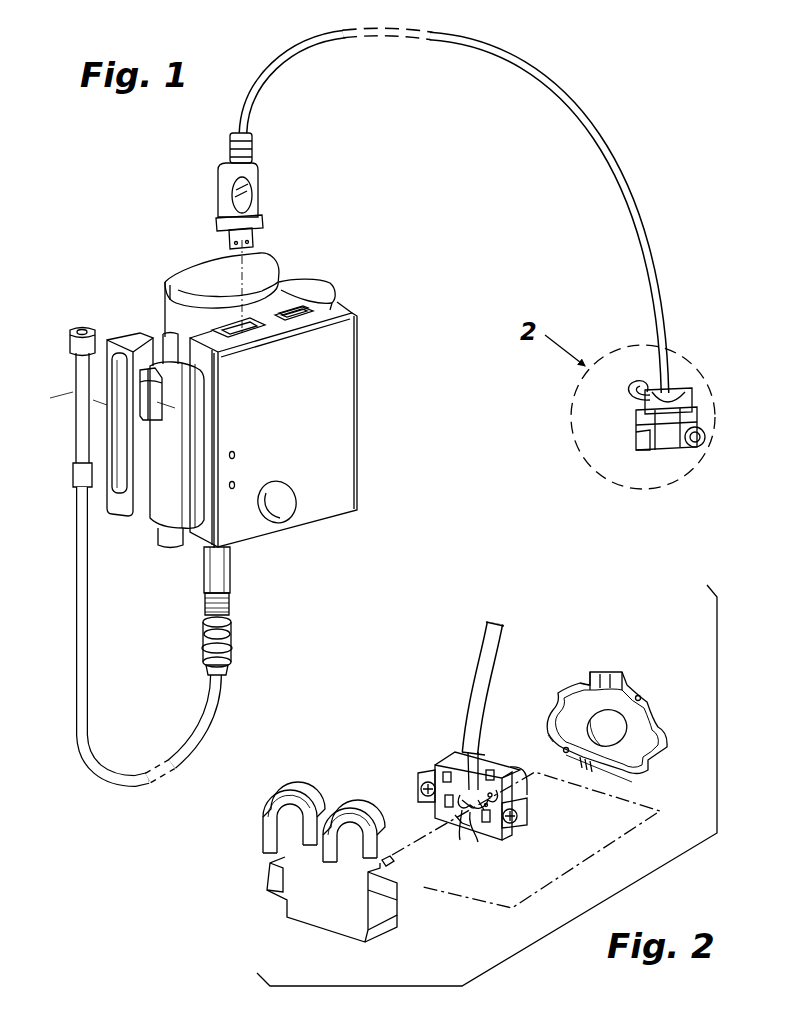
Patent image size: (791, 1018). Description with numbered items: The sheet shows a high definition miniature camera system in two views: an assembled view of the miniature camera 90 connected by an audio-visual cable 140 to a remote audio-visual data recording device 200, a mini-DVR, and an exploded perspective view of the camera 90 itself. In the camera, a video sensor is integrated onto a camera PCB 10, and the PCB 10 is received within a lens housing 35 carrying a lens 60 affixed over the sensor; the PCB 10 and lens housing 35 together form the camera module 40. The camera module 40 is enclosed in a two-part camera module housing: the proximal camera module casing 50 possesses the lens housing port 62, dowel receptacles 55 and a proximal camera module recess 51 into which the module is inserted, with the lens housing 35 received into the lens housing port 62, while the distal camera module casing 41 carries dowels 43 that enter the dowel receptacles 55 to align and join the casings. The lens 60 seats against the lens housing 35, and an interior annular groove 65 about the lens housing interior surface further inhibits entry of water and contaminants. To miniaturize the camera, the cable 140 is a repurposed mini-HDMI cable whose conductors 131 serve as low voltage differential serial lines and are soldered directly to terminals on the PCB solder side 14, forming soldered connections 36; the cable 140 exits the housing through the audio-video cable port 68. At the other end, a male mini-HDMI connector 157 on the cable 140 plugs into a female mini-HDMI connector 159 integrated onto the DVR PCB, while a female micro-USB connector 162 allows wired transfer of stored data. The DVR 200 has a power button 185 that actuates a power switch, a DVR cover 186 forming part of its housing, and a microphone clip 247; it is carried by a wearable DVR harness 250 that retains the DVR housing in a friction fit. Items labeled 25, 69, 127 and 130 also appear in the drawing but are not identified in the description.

In FIG. 2, the camera PCB 10 is at (503, 835).
In FIG. 2, the PCB solder side 14 is at (436, 782).
In FIG. 2, the wire terminals 25 is at (488, 783).
In FIG. 2, the lens housing 35 is at (528, 812).
In FIG. 2, the soldered connections 36 is at (478, 842).
In FIG. 1, the camera module 40 is at (612, 418).
In FIG. 2, the distal camera module casing 41 is at (335, 861).
In FIG. 2, the dowels 43 is at (392, 866).
In FIG. 2, the proximal camera module casing 50 is at (640, 690).
In FIG. 2, the proximal camera module recess 51 is at (553, 718).
In FIG. 2, the dowel receptacles 55 is at (641, 697).
In FIG. 1, the lens 60 is at (683, 443).
In FIG. 2, the lens housing port 62 is at (600, 745).
In FIG. 2, the interior annular groove 65 is at (605, 760).
In FIG. 1, the audio-video cable port 68 is at (648, 382).
In FIG. 2, the audio-video cable port 68 is at (612, 672).
In FIG. 1, the body 69 is at (648, 440).
In FIG. 2, the miniature camera 90 is at (544, 748).
In FIG. 1, the probe rod 127 is at (88, 326).
In FIG. 2, the clip hook 130 is at (278, 795).
In FIG. 2, the conductors 131 is at (447, 837).
In FIG. 1, the audio-visual cable 140 is at (624, 198).
In FIG. 2, the audio-visual cable 140 is at (478, 652).
In FIG. 1, the male mini-HDMI connector 157 is at (260, 230).
In FIG. 1, the female mini-HDMI connector 159 is at (234, 322).
In FIG. 1, the female micro-USB connector 162 is at (289, 305).
In FIG. 1, the power button 185 is at (278, 508).
In FIG. 1, the DVR cover 186 is at (345, 476).
In FIG. 1, the remote audio-visual data recording device 200 is at (264, 399).
In FIG. 1, the microphone clip 247 is at (155, 368).
In FIG. 1, the wearable DVR harness 250 is at (133, 327).